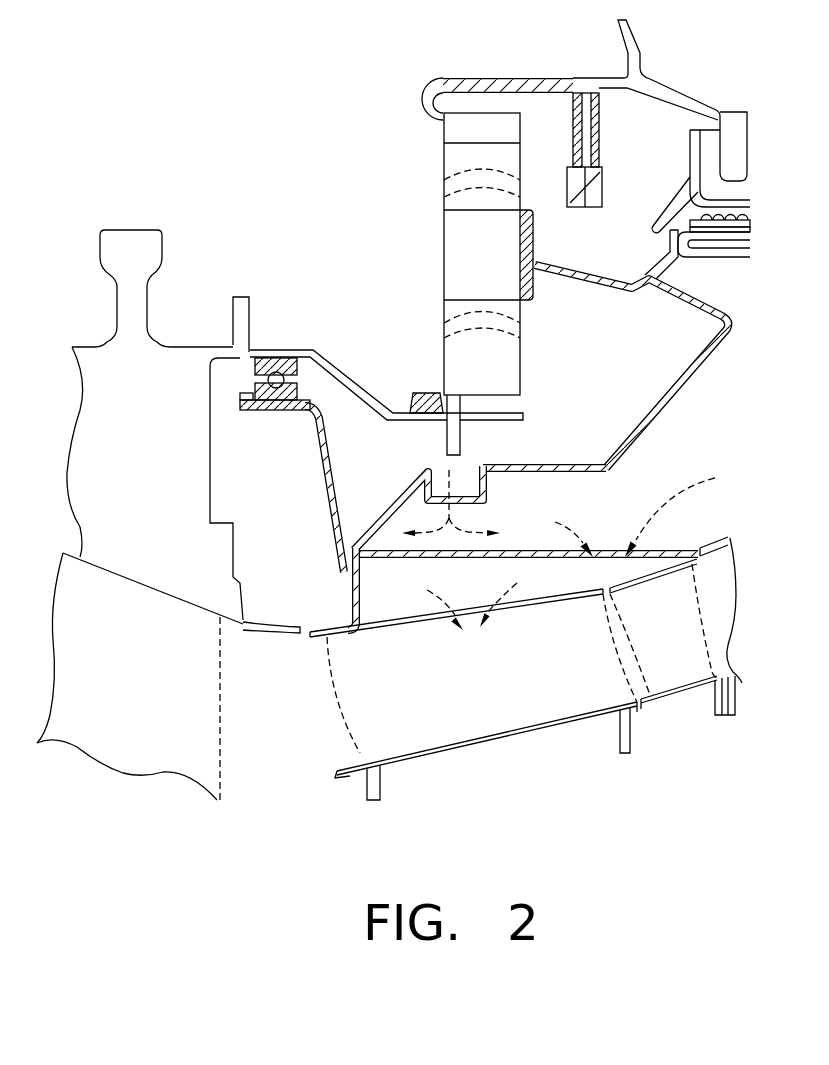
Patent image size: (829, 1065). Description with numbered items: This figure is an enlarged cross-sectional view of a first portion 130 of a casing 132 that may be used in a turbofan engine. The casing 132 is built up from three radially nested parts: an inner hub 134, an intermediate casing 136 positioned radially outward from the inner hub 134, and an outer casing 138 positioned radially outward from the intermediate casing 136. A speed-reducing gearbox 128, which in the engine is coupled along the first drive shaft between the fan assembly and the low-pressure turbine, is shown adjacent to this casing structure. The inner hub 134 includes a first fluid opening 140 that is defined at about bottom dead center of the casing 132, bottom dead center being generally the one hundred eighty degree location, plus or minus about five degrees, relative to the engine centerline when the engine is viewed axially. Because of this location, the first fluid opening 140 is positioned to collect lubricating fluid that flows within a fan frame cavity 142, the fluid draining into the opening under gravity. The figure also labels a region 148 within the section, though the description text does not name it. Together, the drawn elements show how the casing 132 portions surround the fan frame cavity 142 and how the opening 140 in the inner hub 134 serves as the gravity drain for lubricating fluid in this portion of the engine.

The speed-reducing gearbox 128 is at (430, 192).
The first portion 130 is at (190, 110).
The casing 132 is at (608, 410).
The inner hub 134 is at (576, 463).
The intermediate casing 136 is at (562, 503).
The outer casing 138 is at (565, 731).
The first fluid opening 140 is at (445, 470).
The fan frame cavity 142 is at (253, 240).
The cooling cavity 148 is at (543, 519).